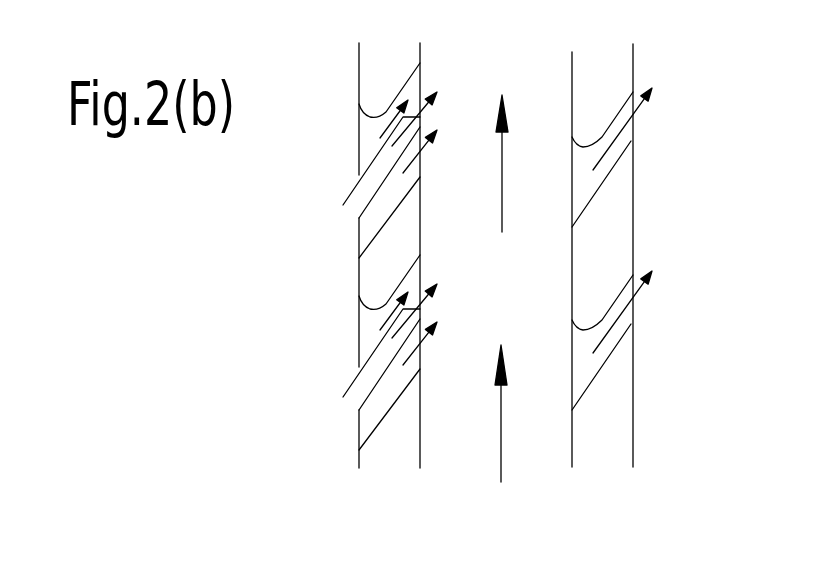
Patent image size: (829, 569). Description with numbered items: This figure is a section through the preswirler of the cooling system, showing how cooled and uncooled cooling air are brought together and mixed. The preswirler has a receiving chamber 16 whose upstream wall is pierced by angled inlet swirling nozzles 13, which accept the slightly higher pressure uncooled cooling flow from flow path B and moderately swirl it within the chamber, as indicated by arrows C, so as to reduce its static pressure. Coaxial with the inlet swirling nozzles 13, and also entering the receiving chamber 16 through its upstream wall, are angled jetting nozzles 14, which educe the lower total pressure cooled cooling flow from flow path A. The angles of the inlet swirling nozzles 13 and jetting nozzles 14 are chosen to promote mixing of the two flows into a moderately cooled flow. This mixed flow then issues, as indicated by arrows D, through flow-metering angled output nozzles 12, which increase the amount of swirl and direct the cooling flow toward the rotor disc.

The flow-metering angled output nozzles 12 is at (622, 345).
The inlet swirling nozzles 13 is at (373, 105).
The jetting nozzles 14 is at (353, 400).
The receiving chamber 16 is at (538, 82).
The flow path A is at (398, 147).
The flow path B is at (380, 137).
The arrows C is at (513, 288).
The arrows D is at (631, 129).